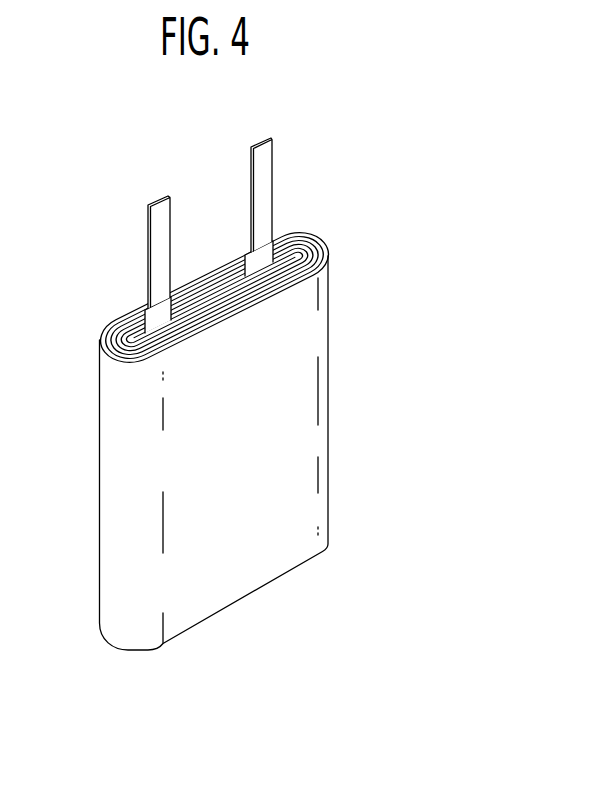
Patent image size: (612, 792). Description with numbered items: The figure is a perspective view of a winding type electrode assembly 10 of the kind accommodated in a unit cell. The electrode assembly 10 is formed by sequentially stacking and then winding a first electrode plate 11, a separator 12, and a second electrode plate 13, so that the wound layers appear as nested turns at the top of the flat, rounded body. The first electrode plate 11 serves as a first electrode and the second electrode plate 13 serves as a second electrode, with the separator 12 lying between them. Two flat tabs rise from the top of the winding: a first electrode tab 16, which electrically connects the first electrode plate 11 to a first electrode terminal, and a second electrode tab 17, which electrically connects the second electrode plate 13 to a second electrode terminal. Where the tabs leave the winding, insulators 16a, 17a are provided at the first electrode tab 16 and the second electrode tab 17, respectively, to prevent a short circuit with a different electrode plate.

The electrode assembly 10 is at (365, 158).
The first electrode plate 11 is at (326, 251).
The separator 12 is at (316, 249).
The second electrode plate 13 is at (306, 246).
The first electrode tab 16 is at (163, 207).
The insulator 16a is at (151, 320).
The second electrode tab 17 is at (263, 150).
The insulator 17a is at (252, 264).